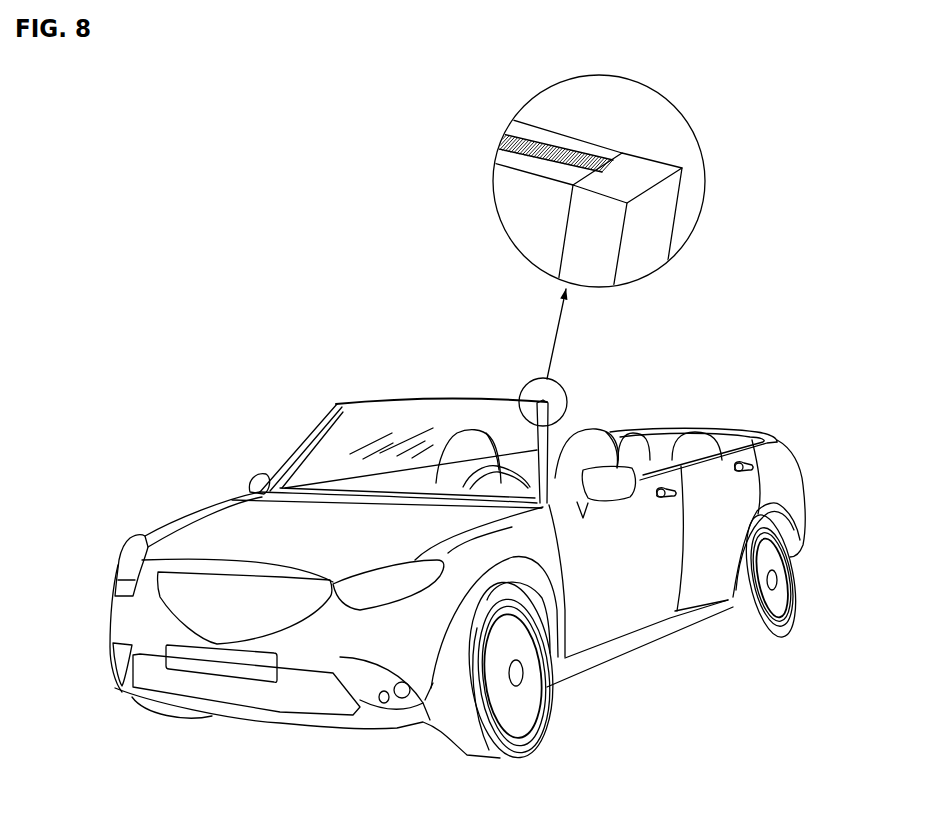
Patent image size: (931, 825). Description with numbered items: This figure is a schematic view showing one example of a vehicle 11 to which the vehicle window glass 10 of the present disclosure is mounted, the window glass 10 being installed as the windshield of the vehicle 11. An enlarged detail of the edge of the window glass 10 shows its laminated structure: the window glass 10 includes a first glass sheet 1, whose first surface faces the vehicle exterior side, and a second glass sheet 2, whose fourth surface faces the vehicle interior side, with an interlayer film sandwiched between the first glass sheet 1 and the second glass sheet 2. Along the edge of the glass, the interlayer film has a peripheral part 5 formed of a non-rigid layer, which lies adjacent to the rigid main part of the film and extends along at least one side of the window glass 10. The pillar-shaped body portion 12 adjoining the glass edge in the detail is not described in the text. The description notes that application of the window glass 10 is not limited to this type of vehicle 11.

The first glass sheet 1 is at (539, 173).
The second glass sheet 2 is at (601, 148).
The peripheral part 5 is at (559, 151).
The vehicle window glass 10 is at (415, 391).
The vehicle 11 is at (716, 352).
The pillar 12 is at (653, 219).